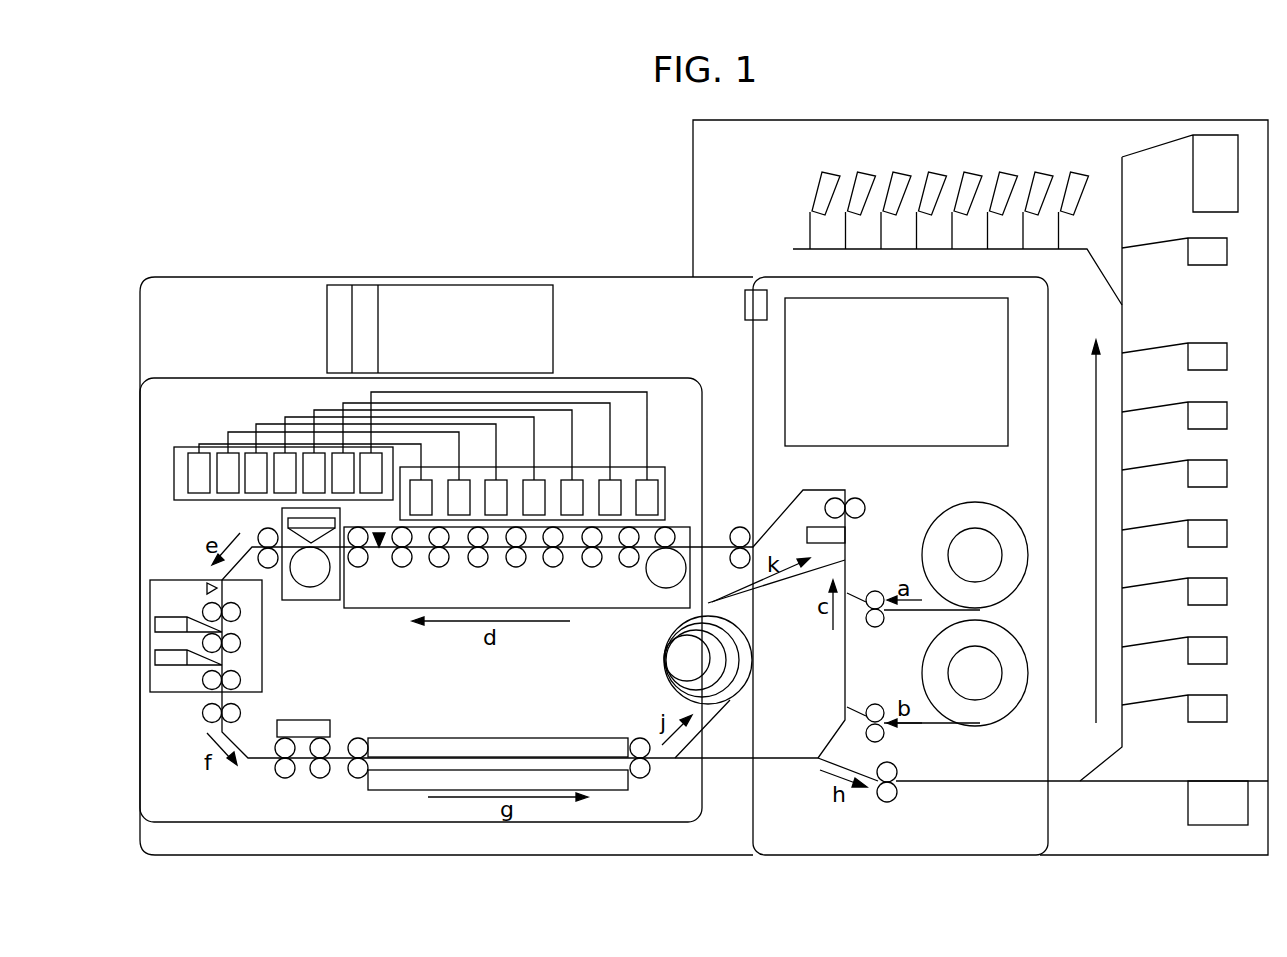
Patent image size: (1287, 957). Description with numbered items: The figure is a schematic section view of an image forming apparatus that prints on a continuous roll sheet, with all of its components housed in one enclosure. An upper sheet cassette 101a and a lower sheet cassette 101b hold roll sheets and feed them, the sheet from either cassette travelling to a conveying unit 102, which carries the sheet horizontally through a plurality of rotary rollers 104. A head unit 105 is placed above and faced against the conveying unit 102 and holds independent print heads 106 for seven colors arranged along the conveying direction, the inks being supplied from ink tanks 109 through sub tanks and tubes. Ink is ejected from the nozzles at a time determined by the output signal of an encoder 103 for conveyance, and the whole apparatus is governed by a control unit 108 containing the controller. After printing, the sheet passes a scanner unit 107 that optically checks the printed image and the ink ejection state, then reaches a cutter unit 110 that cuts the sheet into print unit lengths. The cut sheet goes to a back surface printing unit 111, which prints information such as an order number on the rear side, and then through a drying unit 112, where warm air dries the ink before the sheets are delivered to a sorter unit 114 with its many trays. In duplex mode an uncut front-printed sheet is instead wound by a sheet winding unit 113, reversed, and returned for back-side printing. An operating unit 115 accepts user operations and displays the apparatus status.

The upper sheet cassette 101a is at (927, 565).
The lower sheet cassette 101b is at (927, 680).
The conveying unit 102 is at (390, 610).
The encoder 103 is at (665, 577).
The rotary rollers 104 is at (629, 568).
The head unit 105 is at (665, 477).
The print heads 106 is at (644, 490).
The scanner unit 107 is at (313, 600).
The control unit 108 is at (327, 328).
The ink tanks 109 is at (367, 462).
The cutter unit 110 is at (262, 657).
The back surface printing unit 111 is at (330, 720).
The drying unit 112 is at (452, 738).
The sheet winding unit 113 is at (663, 662).
The sorter unit 114 is at (692, 190).
The operating unit 115 is at (942, 446).